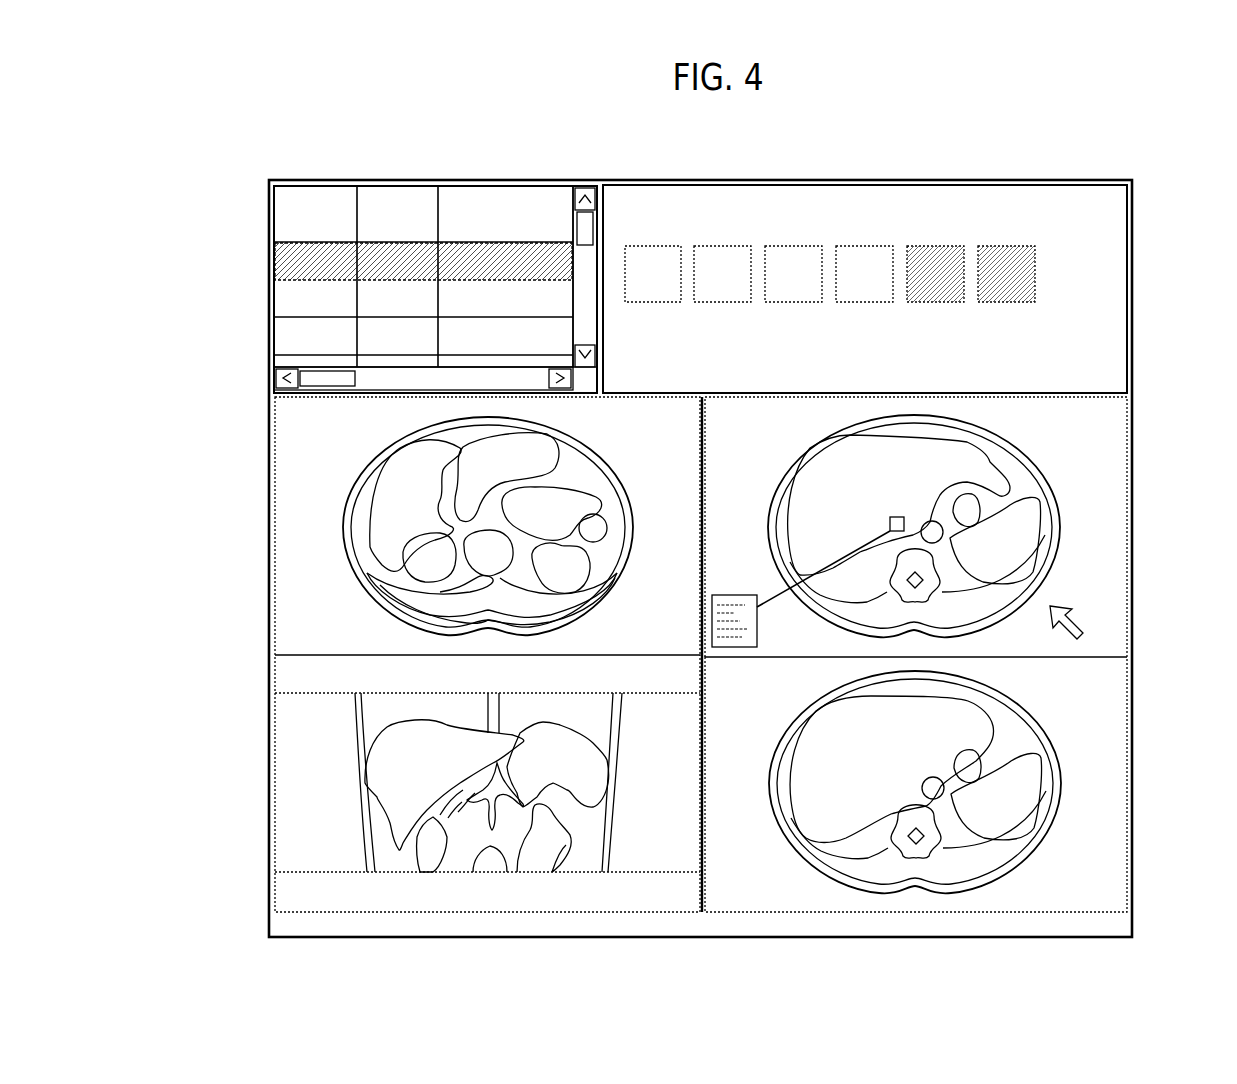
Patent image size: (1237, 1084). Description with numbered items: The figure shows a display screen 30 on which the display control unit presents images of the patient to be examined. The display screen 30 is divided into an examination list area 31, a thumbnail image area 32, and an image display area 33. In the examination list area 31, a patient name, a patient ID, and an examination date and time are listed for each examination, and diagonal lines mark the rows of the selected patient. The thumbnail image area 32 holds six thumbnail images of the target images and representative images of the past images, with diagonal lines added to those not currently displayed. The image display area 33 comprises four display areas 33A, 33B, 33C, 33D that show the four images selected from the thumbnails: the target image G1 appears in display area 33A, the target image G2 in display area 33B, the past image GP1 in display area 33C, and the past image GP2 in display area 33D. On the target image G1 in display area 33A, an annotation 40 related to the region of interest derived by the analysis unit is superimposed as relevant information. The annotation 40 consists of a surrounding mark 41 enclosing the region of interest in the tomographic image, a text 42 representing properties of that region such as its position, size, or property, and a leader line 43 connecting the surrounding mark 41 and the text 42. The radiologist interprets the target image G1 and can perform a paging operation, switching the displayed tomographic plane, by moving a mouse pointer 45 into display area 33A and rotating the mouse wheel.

The display screen 30 is at (1155, 178).
The examination list area 31 is at (436, 186).
The thumbnail image area 32 is at (1120, 270).
The image display area 33 is at (1143, 560).
The display area 33A is at (1120, 412).
The display area 33B is at (1120, 670).
The display area 33C is at (282, 410).
The display area 33D is at (282, 670).
The target image G1 is at (956, 534).
The target image G2 is at (1120, 717).
The past image GP1 is at (282, 457).
The past image GP2 is at (282, 717).
The annotation 40 is at (782, 542).
The figure 41 is at (889, 524).
The text 42 is at (731, 594).
The leader line 43 is at (830, 572).
The mouse pointer 45 is at (1078, 618).